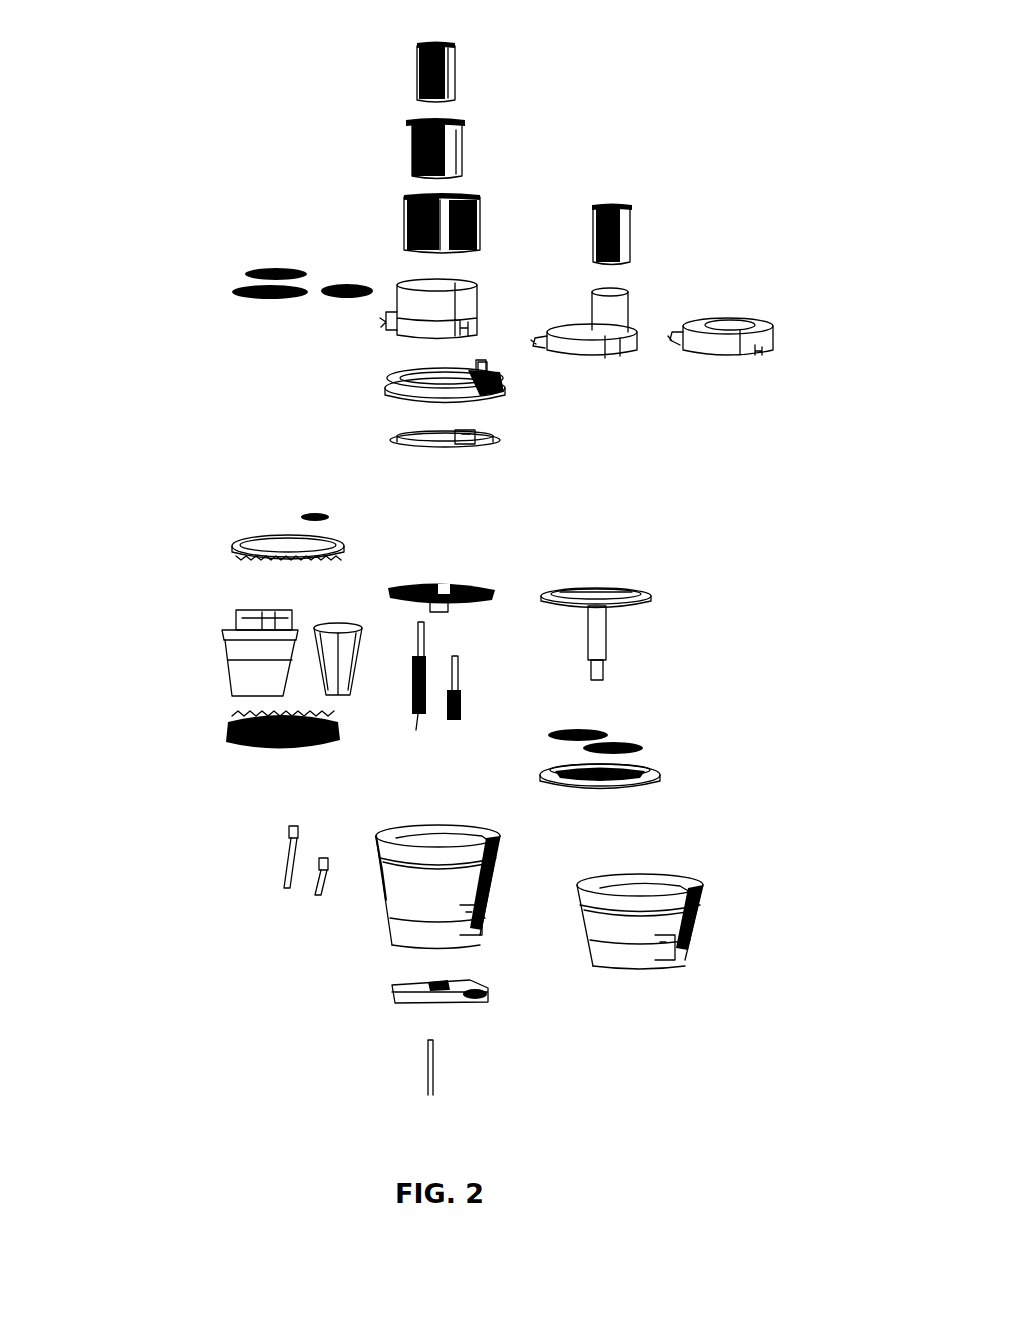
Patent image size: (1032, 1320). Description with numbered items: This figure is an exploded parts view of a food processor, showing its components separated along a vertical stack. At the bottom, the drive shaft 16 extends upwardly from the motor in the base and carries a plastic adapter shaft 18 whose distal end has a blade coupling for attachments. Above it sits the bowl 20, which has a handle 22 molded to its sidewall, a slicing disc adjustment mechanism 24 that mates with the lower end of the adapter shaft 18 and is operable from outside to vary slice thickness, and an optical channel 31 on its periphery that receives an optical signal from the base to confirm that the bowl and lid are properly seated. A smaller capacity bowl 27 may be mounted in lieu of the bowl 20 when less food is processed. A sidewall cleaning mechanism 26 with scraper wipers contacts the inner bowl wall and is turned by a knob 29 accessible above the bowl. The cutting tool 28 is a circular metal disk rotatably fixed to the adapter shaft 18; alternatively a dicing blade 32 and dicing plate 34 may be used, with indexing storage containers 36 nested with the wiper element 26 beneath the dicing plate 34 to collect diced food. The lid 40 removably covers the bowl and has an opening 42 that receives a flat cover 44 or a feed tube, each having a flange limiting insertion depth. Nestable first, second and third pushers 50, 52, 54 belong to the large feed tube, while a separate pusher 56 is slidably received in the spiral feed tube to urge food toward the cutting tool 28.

The drive shaft 16 is at (433, 1058).
The adapter shaft 18 is at (418, 714).
The bowl 20 is at (440, 883).
The handle 22 is at (495, 870).
The slicing disc adjustment mechanism 24 is at (398, 996).
The sidewall cleaning mechanism 26 is at (295, 892).
The smaller capacity bowl 27 is at (710, 876).
The cutting tool 28 is at (460, 576).
The knob 29 is at (492, 368).
The optical channel 31 is at (372, 856).
The dicing blade 32 is at (624, 592).
The dicing plate 34 is at (651, 735).
The indexing storage containers 36 is at (212, 626).
The lid 40 is at (370, 378).
The opening 42 is at (465, 312).
The flat cover 44 is at (616, 334).
The first pusher 50 is at (475, 218).
The second pusher 52 is at (462, 140).
The third pusher 54 is at (455, 68).
The pusher 56 is at (623, 230).